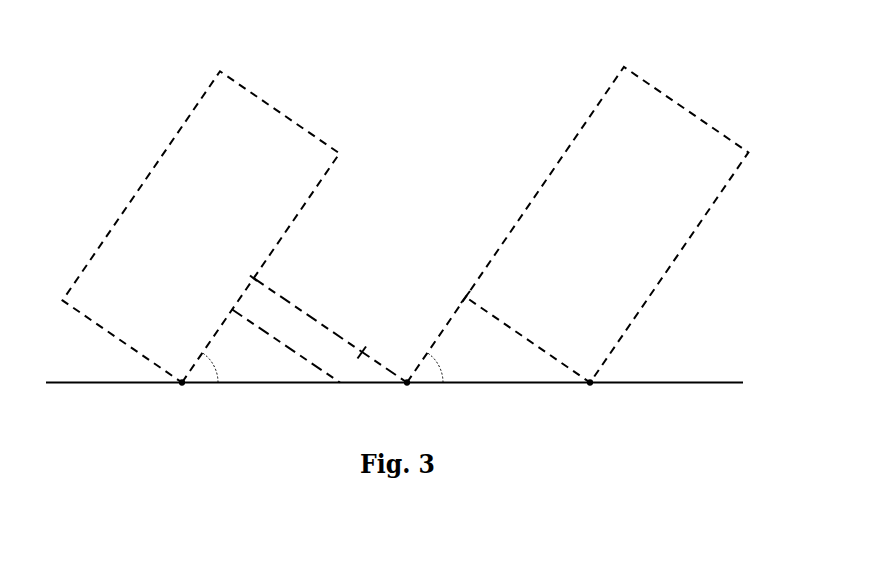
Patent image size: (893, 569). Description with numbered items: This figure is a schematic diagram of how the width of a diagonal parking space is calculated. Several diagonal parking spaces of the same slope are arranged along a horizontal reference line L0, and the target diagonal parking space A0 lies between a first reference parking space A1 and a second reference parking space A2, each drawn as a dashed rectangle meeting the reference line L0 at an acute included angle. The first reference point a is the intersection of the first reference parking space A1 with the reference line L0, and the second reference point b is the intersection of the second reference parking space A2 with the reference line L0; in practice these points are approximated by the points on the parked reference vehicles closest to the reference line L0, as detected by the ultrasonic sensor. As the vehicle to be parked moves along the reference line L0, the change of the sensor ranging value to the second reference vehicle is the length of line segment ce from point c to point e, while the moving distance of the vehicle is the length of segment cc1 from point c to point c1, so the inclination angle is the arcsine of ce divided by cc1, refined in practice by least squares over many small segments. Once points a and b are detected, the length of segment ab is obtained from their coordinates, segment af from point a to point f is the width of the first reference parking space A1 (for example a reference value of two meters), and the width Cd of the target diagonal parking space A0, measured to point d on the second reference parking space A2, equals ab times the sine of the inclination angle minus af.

The target diagonal parking space A0 is at (407, 218).
The first reference parking space A1 is at (582, 130).
The second reference parking space A2 is at (270, 103).
The reference line L0 is at (684, 381).
The first reference point a is at (592, 394).
The second reference point b is at (199, 380).
The point c is at (429, 380).
The point c1 is at (292, 360).
The point d is at (328, 327).
The point e is at (364, 346).
The point f is at (461, 291).